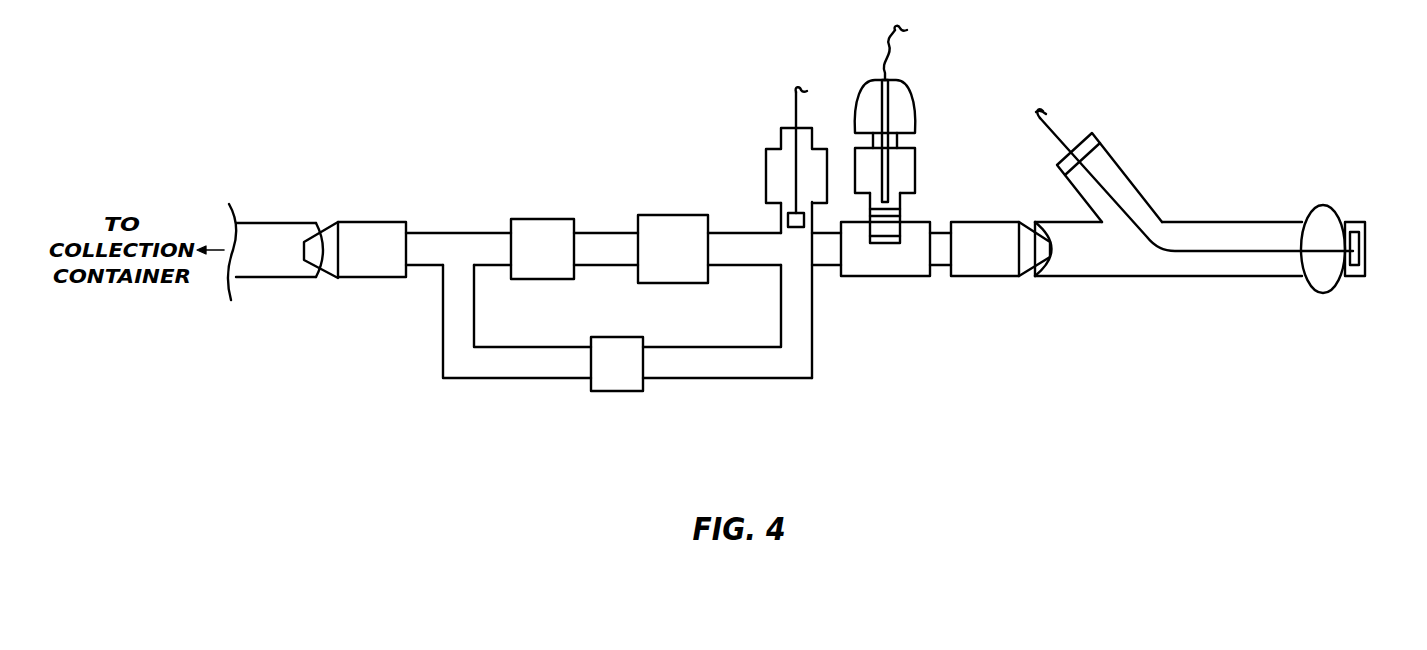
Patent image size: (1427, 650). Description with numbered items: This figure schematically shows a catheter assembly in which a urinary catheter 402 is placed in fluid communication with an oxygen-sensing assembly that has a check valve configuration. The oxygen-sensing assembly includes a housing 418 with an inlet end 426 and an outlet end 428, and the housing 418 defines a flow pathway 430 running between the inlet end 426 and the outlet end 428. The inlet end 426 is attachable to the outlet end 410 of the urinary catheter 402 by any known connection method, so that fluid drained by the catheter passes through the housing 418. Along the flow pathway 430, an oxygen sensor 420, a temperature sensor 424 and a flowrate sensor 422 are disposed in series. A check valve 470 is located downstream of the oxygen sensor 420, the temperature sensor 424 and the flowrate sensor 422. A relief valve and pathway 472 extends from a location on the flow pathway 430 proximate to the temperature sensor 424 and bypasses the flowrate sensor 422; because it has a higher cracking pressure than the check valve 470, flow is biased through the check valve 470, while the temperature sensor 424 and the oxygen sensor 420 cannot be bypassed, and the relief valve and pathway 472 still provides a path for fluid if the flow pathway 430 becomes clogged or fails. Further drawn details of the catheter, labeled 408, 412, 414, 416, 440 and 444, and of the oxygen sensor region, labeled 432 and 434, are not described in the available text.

The urinary catheter 402 is at (1165, 279).
The distal tip 408 is at (1366, 226).
The outlet end 410 is at (1035, 279).
The tube lumen 412 is at (1187, 258).
The balloon 414 is at (1323, 206).
The side branch port 416 is at (1098, 136).
The housing 418 is at (929, 279).
The oxygen sensor 420 is at (926, 167).
The flowrate sensor 422 is at (680, 214).
The temperature sensor 424 is at (788, 222).
The inlet end 426 is at (1048, 223).
The outlet end 428 is at (305, 250).
The flow pathway 430 is at (916, 245).
The valve knob 432 is at (888, 108).
The valve body 434 is at (884, 245).
The guidewire lumen 440 is at (1244, 243).
The tip opening 444 is at (1359, 258).
The check valve 470 is at (545, 218).
The relief valve and pathway 472 is at (673, 397).